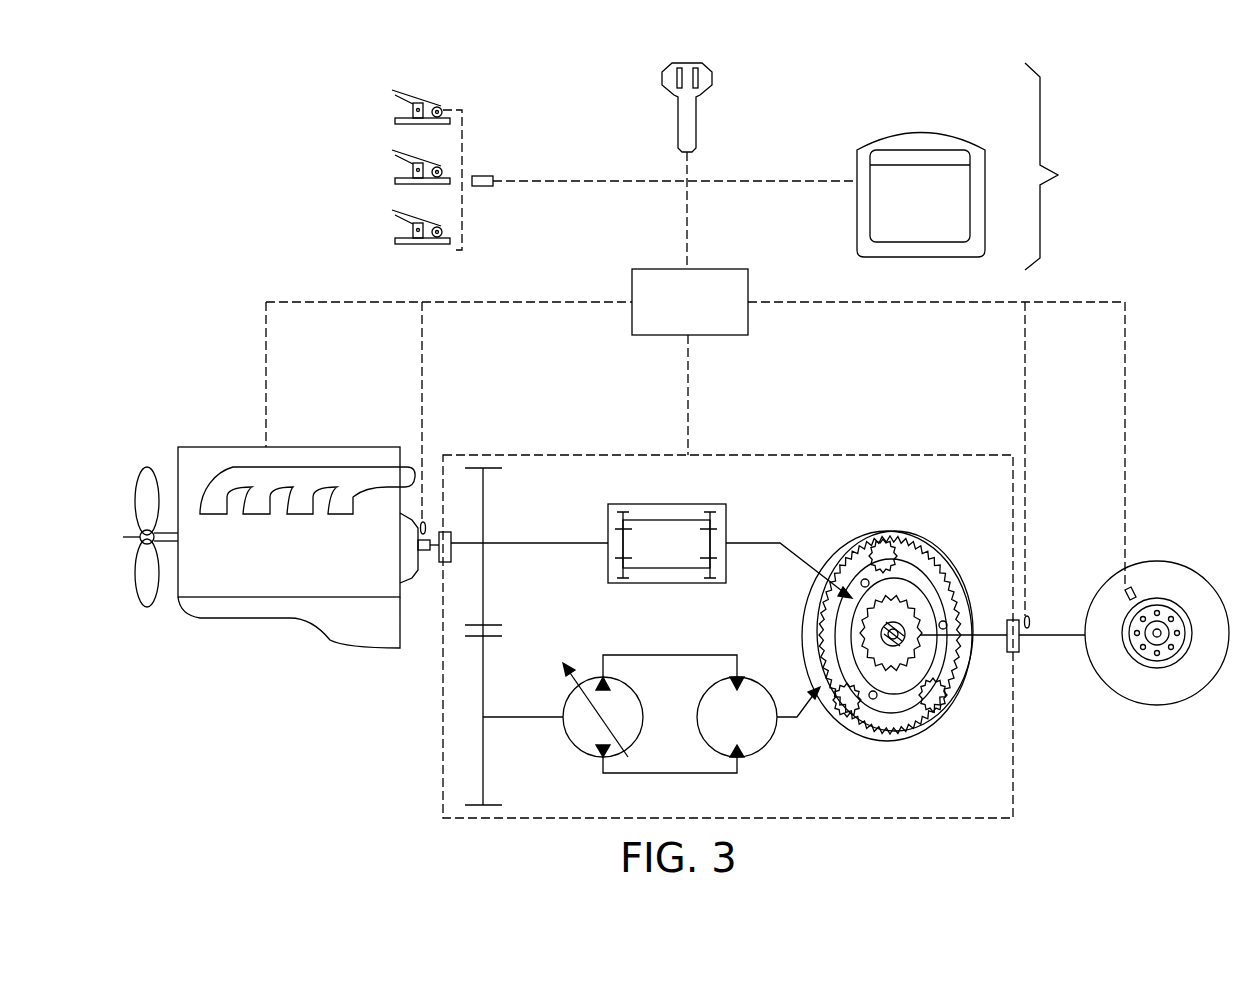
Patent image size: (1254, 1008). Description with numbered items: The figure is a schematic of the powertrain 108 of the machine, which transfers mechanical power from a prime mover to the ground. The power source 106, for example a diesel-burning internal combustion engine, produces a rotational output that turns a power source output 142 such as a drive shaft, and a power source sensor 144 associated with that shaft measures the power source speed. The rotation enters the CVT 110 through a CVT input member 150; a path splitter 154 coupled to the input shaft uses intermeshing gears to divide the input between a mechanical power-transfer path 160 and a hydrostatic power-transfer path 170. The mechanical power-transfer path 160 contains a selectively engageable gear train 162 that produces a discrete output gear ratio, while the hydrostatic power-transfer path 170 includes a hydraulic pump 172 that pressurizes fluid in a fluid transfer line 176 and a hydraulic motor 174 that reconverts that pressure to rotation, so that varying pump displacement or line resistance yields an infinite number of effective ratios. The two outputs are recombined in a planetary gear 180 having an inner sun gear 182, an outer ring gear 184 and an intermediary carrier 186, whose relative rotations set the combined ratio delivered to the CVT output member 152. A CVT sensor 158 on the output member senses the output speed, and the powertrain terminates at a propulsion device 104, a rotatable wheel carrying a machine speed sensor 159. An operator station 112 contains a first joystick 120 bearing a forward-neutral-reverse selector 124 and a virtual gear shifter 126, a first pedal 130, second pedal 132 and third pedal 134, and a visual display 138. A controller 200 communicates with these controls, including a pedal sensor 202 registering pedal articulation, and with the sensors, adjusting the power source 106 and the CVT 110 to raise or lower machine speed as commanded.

The propulsion device 104 is at (1157, 690).
The power source 106 is at (233, 447).
The powertrain 108 is at (517, 425).
The CVT 110 is at (617, 455).
The operator station 112 is at (1066, 166).
The first joystick 120 is at (690, 102).
The forward-neutral-reverse selector 124 is at (674, 74).
The virtual gear shifter 126 is at (700, 74).
The first pedal 130 is at (400, 120).
The second pedal 132 is at (400, 180).
The third pedal 134 is at (400, 240).
The visual display 138 is at (918, 137).
The power source output 142 is at (426, 552).
The power source sensor 144 is at (425, 521).
The CVT input member 150 is at (450, 560).
The CVT output member 152 is at (1019, 652).
The path splitter 154 is at (484, 503).
The CVT sensor 158 is at (1031, 620).
The machine speed sensor 159 is at (1135, 592).
The mechanical power-transfer path 160 is at (730, 533).
The gear train 162 is at (663, 520).
The hydrostatic power-transfer path 170 is at (693, 734).
The hydraulic pump 172 is at (614, 674).
The hydraulic motor 174 is at (703, 737).
The fluid transfer line 176 is at (640, 655).
The planetary gear 180 is at (900, 634).
The sun gear 182 is at (893, 612).
The ring gear 184 is at (914, 732).
The carrier 186 is at (932, 672).
The controller 200 is at (712, 314).
The pedal sensor 202 is at (481, 176).